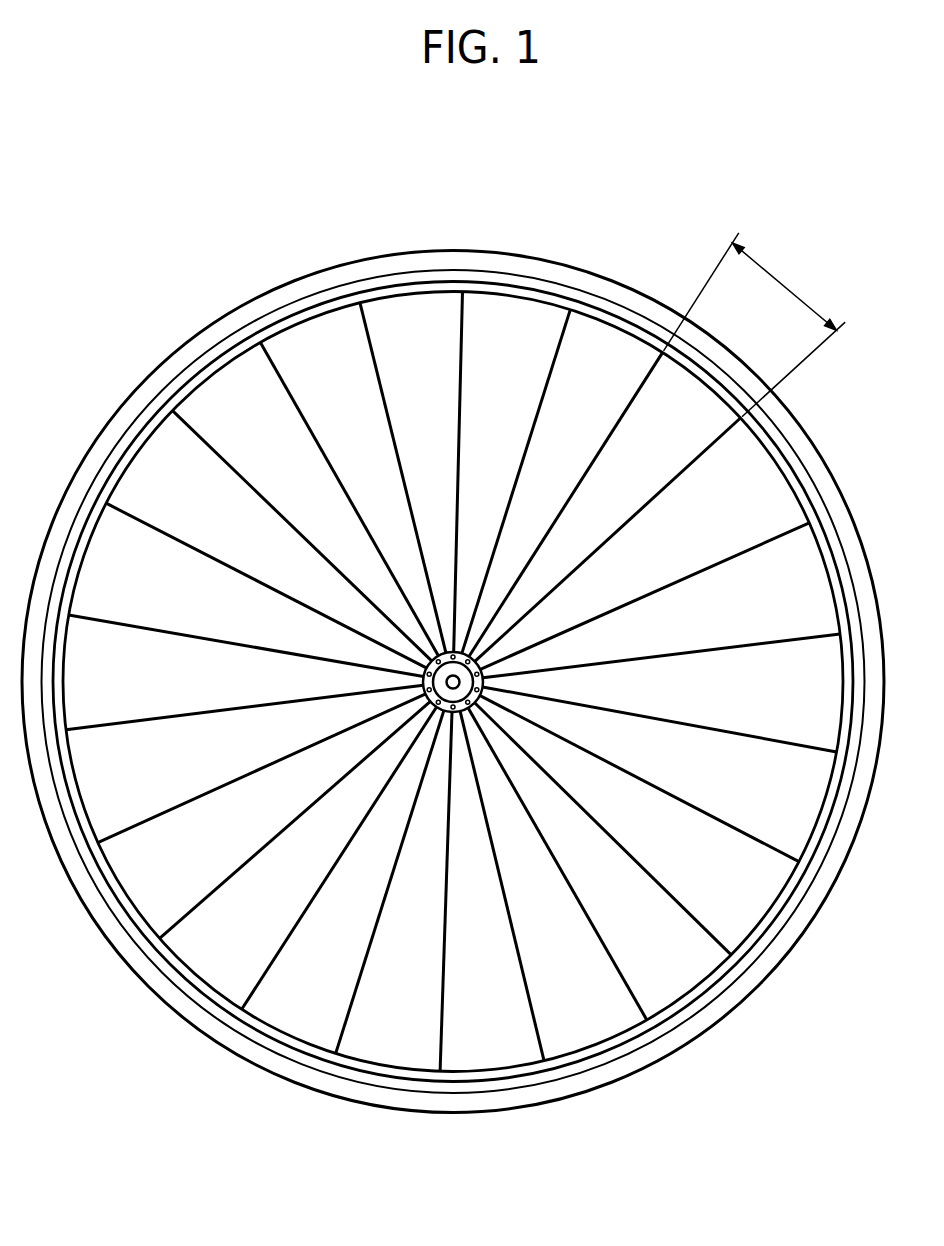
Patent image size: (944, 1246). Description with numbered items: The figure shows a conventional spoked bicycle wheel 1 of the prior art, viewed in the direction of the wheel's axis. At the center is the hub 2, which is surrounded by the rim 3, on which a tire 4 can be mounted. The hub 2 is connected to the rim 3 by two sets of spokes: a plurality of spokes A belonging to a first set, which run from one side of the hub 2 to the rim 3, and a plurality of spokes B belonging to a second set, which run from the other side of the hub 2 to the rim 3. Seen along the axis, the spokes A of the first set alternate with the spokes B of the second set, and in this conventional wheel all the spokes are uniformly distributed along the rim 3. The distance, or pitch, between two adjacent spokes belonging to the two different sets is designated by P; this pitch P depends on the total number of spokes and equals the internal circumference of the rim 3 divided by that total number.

The bicycle wheel 1 is at (103, 215).
The hub 2 is at (487, 683).
The rim 3 is at (405, 293).
The tire 4 is at (368, 263).
The spokes of the first set A is at (327, 460).
The spokes of the second set B is at (398, 458).
The pitch P is at (755, 319).